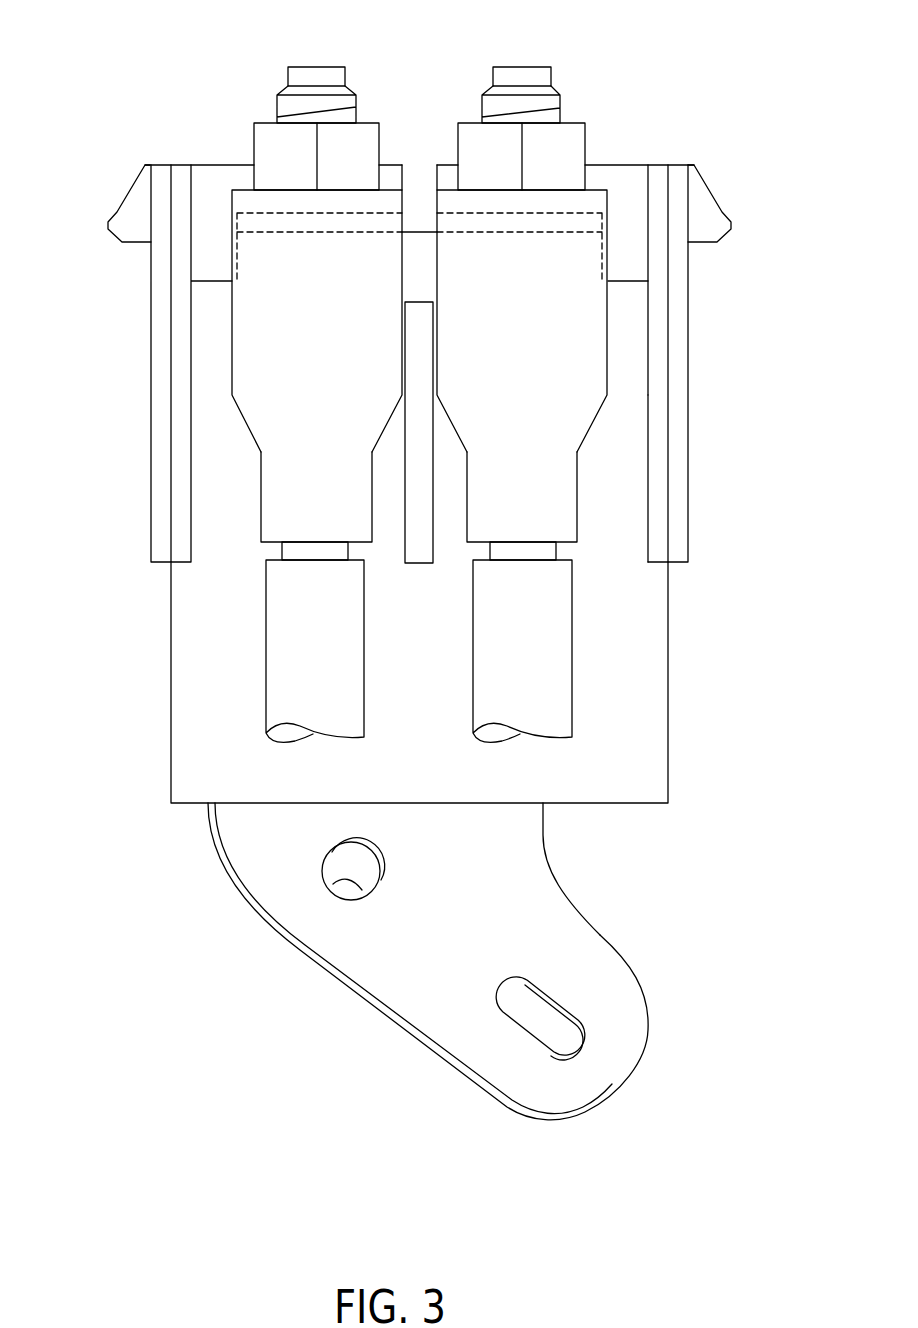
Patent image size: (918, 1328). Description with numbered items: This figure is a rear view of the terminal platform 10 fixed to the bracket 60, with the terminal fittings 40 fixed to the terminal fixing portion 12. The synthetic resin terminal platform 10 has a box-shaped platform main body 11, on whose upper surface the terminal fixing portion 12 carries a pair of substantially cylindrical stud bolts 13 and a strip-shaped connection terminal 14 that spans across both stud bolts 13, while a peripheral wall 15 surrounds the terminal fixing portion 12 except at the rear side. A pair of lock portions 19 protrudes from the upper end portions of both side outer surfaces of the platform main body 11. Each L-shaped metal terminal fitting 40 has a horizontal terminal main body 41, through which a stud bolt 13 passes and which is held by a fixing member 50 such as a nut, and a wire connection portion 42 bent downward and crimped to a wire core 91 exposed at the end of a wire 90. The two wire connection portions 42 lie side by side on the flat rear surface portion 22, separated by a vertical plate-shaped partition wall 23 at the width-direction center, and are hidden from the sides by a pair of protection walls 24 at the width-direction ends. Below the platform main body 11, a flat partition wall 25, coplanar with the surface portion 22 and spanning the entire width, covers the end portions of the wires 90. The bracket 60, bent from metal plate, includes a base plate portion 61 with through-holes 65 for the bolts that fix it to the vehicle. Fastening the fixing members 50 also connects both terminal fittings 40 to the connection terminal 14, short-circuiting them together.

The terminal platform 10 is at (392, 163).
The platform main body 11 is at (688, 283).
The terminal fixing portion 12 is at (427, 232).
The stud bolt 13 is at (305, 72).
The connection terminal 14 is at (417, 217).
The peripheral wall 15 is at (627, 185).
The lock portion 19 is at (118, 212).
The surface portion 22 is at (617, 432).
The partition wall 23 is at (418, 437).
The protection wall 24 is at (177, 306).
The partition wall 25 is at (655, 750).
The terminal fitting 40 is at (232, 379).
The terminal main body 41 is at (283, 188).
The wire connection portion 42 is at (272, 508).
The fixing member 50 is at (297, 135).
The bracket 60 is at (637, 975).
The base plate portion 61 is at (563, 913).
The through-hole 65 is at (362, 893).
The wire 90 is at (265, 682).
The wire core 91 is at (290, 550).